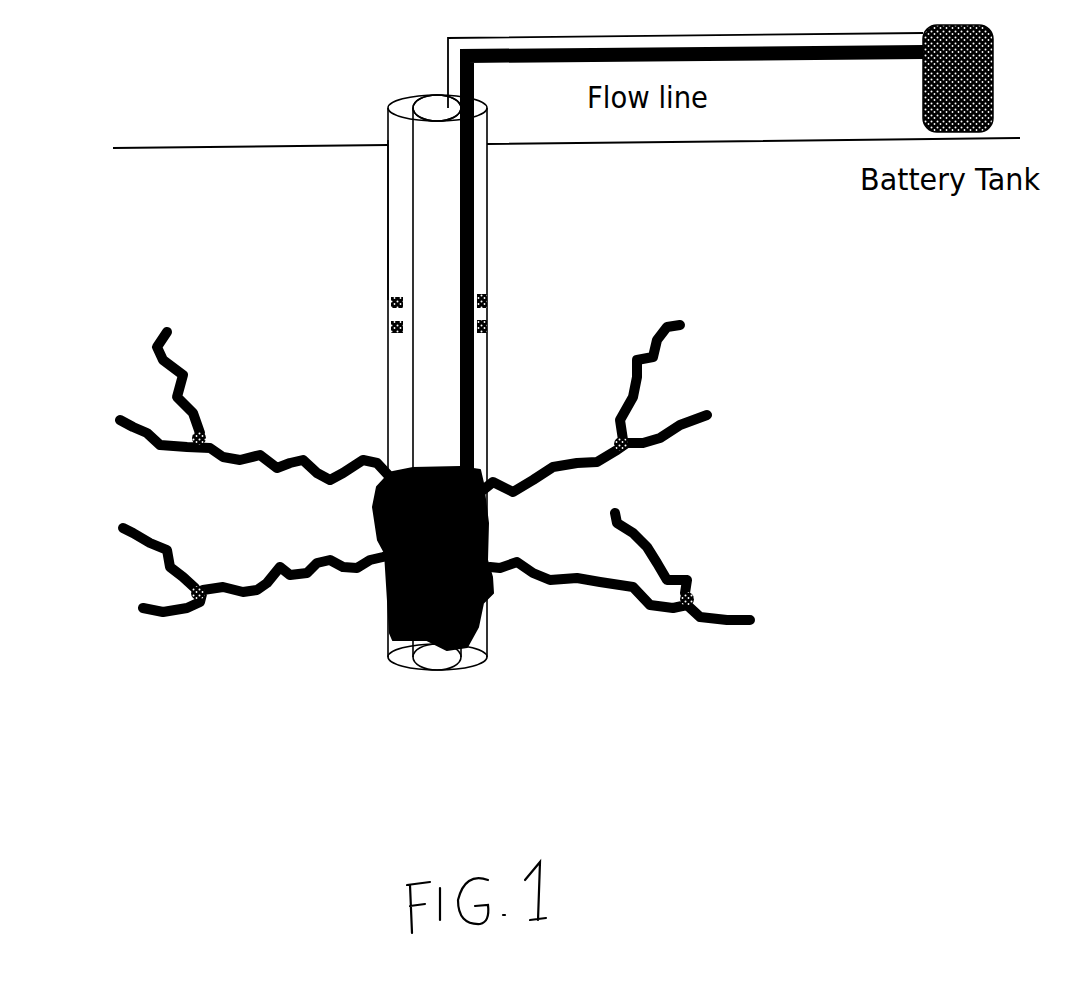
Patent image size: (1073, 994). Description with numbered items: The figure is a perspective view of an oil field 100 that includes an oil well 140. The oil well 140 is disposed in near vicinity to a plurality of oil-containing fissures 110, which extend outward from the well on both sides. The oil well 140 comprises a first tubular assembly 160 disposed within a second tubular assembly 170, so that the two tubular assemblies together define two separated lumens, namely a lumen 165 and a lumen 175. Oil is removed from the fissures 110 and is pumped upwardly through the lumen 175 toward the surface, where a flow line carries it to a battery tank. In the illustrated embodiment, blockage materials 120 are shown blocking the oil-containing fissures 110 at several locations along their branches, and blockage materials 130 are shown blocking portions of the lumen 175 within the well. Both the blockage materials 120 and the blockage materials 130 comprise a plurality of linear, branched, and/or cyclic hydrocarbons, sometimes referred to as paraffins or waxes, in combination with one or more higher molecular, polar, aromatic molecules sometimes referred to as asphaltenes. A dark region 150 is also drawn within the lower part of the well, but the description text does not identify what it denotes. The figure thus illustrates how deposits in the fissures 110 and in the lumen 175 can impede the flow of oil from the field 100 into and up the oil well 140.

The oil field 100 is at (900, 618).
The oil-containing fissures 110 is at (272, 452).
The blockage materials 120 is at (195, 455).
The blockage materials 130 is at (378, 328).
The oil well 140 is at (386, 680).
The fluid / proppant plug 150 is at (387, 602).
The first tubular assembly 160 is at (413, 183).
The lumen 165 is at (430, 108).
The second tubular assembly 170 is at (390, 225).
The lumen 175 is at (392, 254).